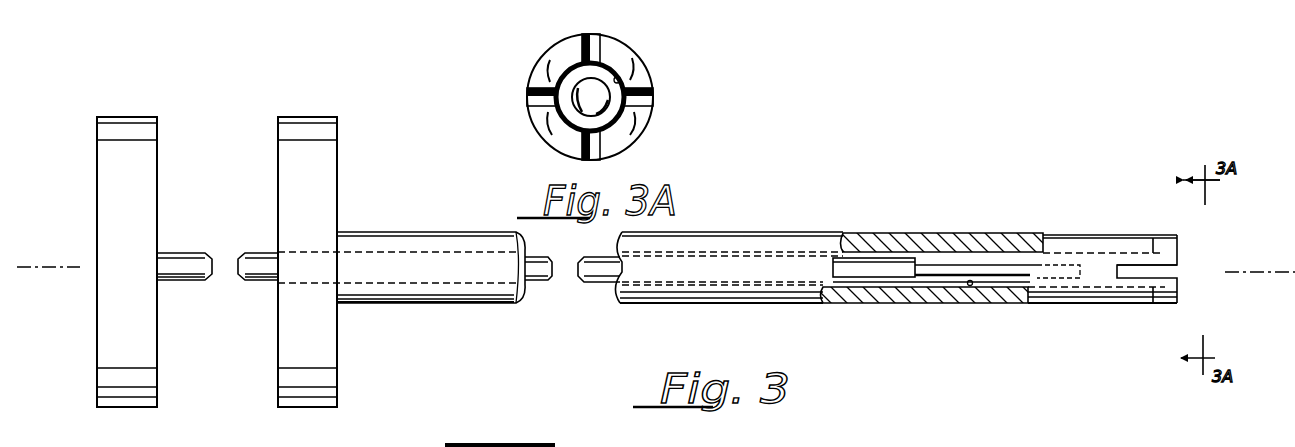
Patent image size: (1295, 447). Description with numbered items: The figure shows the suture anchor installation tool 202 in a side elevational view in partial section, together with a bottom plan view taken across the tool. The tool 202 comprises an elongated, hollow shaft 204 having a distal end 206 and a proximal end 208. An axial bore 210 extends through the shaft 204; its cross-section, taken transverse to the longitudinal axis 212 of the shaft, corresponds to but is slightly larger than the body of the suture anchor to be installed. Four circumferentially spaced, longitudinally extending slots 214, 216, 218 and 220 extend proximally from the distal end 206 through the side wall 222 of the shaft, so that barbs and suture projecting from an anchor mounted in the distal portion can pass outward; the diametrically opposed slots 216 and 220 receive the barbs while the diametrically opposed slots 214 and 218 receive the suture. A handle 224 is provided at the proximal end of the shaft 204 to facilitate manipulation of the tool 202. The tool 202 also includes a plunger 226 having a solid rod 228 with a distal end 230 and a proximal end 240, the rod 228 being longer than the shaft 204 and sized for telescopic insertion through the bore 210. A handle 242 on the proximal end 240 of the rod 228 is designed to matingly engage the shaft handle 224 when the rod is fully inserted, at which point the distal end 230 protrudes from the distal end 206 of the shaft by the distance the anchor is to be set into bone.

In FIG. 3, the installation tool 202 is at (932, 282).
In FIG. 3, the hollow shaft 204 is at (797, 306).
In FIG. 3A, the hollow shaft 204 is at (636, 52).
In FIG. 3, the distal end 206 is at (1183, 286).
In FIG. 3A, the distal end 206 is at (645, 86).
In FIG. 3, the proximal end 208 is at (441, 229).
In FIG. 3, the axial bore 210 is at (971, 286).
In FIG. 3A, the axial bore 210 is at (621, 82).
In FIG. 3, the longitudinal axis 212 is at (1284, 270).
In FIG. 3, the slot 214 is at (1171, 272).
In FIG. 3A, the slot 214 is at (535, 98).
In FIG. 3, the slot 216 is at (1157, 237).
In FIG. 3A, the slot 216 is at (586, 56).
In FIG. 3A, the slot 218 is at (651, 100).
In FIG. 3, the slot 220 is at (1165, 307).
In FIG. 3A, the slot 220 is at (600, 150).
In FIG. 3, the side wall 222 is at (1010, 300).
In FIG. 3, the handle 224 is at (326, 232).
In FIG. 3, the plunger 226 is at (576, 298).
In FIG. 3, the solid rod 228 is at (537, 286).
In FIG. 3, the distal end 230 is at (942, 277).
In FIG. 3, the proximal end 240 is at (183, 248).
In FIG. 3, the handle 242 is at (143, 238).